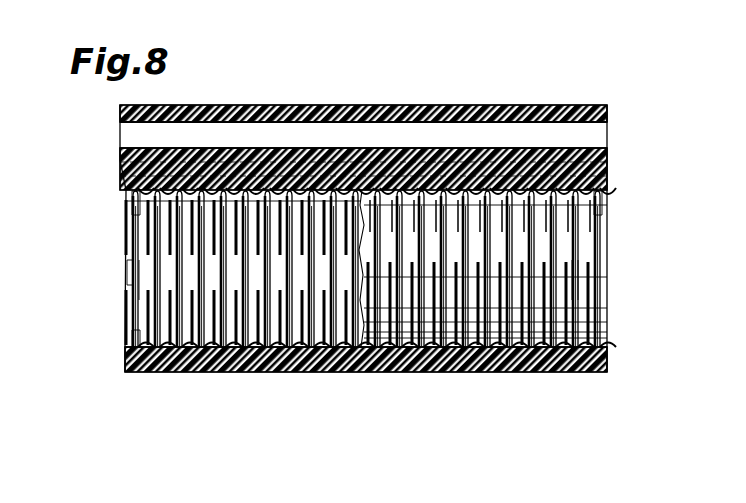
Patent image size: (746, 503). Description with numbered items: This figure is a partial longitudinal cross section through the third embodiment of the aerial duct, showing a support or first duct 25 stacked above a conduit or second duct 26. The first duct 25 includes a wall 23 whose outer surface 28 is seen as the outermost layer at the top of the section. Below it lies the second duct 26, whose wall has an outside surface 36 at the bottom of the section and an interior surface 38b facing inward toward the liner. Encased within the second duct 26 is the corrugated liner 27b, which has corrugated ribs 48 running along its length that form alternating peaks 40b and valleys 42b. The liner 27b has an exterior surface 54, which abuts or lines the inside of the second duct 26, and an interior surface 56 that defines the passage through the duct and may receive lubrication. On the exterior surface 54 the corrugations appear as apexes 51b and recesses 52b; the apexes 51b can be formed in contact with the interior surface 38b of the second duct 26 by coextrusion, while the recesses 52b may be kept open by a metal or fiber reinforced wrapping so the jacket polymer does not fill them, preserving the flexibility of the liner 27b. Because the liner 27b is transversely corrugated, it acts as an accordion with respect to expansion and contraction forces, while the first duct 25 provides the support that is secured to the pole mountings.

The outer surface 28 is at (343, 105).
The wall 23 is at (607, 109).
The first duct 25 is at (120, 106).
The apexes 51b is at (125, 191).
The liner 27b is at (125, 195).
The peaks 40b is at (137, 224).
The corrugated ribs 48 is at (123, 272).
The interior surface 56 is at (143, 288).
The valleys 42b is at (150, 346).
The recess 52b is at (604, 195).
The second duct 26 is at (607, 369).
The exterior surface 54 is at (590, 266).
The outside surface 36 is at (468, 373).
The interior surface 38b is at (402, 357).